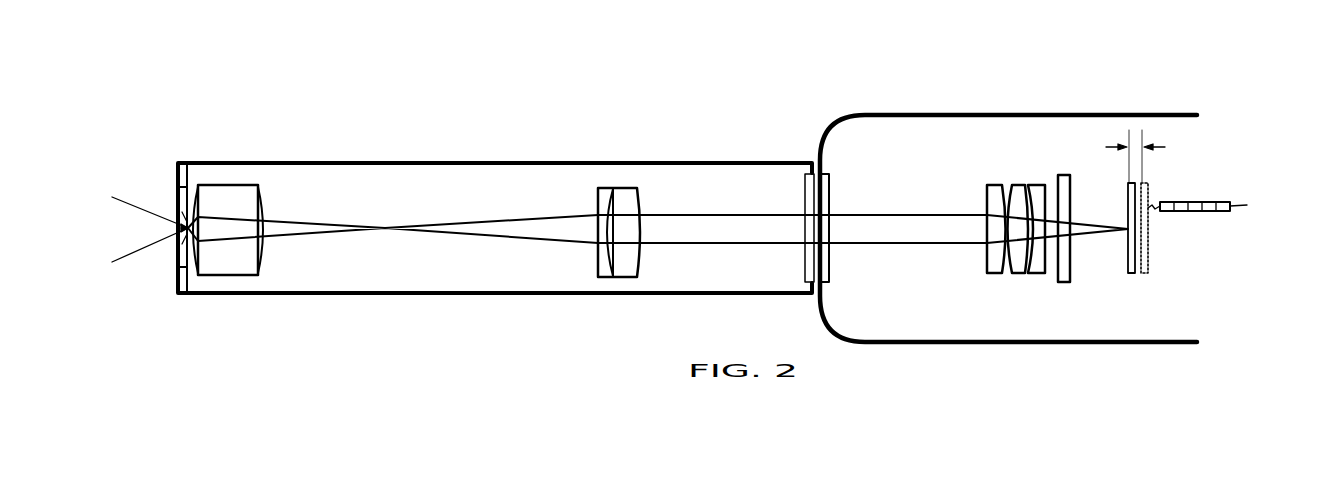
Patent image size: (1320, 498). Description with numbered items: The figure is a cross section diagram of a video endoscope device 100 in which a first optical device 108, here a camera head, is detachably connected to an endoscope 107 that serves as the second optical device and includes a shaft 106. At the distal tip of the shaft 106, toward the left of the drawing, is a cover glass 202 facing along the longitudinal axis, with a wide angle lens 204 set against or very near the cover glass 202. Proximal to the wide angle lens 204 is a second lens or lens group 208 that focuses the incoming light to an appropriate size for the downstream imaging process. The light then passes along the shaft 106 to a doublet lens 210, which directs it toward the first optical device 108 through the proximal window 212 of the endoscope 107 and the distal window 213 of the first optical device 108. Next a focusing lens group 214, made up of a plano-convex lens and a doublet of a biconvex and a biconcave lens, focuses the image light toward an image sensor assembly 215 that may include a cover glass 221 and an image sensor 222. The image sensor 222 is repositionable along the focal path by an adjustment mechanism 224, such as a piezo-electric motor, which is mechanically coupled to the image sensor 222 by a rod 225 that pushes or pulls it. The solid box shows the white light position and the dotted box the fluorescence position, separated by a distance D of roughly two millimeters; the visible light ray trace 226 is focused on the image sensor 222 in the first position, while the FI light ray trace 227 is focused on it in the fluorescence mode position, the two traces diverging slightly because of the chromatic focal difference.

The video endoscope device 100 is at (664, 81).
The shaft 106 is at (450, 162).
The endoscope 107 is at (372, 138).
The first optical device 108 is at (1026, 93).
The cover glass 202 is at (172, 189).
The wide angle lens 204 is at (174, 228).
The second lens or lens group 208 is at (227, 183).
The doublet lens 210 is at (635, 188).
The proximal window 212 is at (803, 172).
The distal window 213 is at (826, 173).
The focusing lens group 214 is at (992, 171).
The image sensor assembly 215 is at (1184, 171).
The cover glass 221 is at (1065, 174).
The image sensor 222 is at (1128, 276).
The adjustment mechanism 224 is at (1247, 205).
The rod 225 is at (1152, 208).
The visible light ray trace 226 is at (1080, 243).
The FI light ray trace 227 is at (1136, 228).